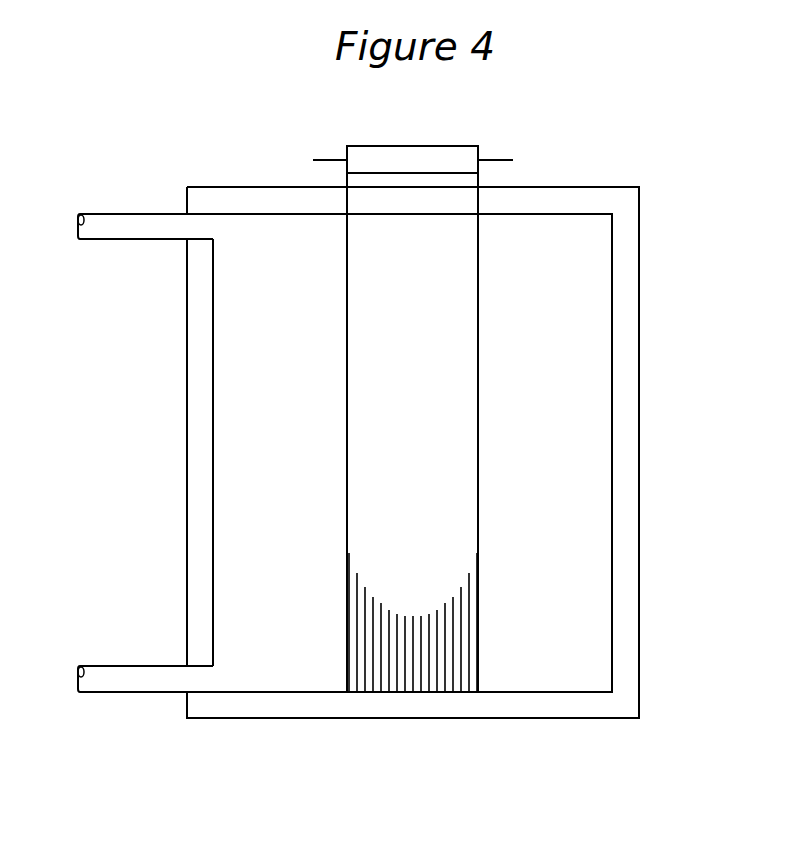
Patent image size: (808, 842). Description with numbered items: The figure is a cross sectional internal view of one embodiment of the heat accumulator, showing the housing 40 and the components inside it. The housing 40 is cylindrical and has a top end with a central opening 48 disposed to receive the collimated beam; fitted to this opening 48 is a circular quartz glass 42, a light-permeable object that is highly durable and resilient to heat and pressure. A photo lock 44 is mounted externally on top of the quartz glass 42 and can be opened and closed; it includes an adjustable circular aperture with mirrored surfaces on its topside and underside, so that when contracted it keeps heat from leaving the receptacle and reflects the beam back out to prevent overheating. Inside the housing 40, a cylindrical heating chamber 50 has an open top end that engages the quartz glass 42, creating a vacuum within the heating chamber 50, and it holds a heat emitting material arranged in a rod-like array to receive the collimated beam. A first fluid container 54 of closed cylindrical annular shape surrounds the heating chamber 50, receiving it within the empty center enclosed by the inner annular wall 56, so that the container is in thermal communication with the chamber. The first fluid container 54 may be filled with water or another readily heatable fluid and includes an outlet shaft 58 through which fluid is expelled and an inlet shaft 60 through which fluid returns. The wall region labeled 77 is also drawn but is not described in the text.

The housing 40 is at (640, 187).
The quartz glass 42 is at (458, 198).
The photo lock 44 is at (479, 146).
The central opening 48 is at (413, 655).
The heating chamber 50 is at (388, 288).
The first fluid container 54 is at (262, 465).
The inner annular wall 56 is at (347, 438).
The outlet shaft 58 is at (125, 220).
The inlet shaft 60 is at (113, 678).
The outer wall 77 is at (625, 332).